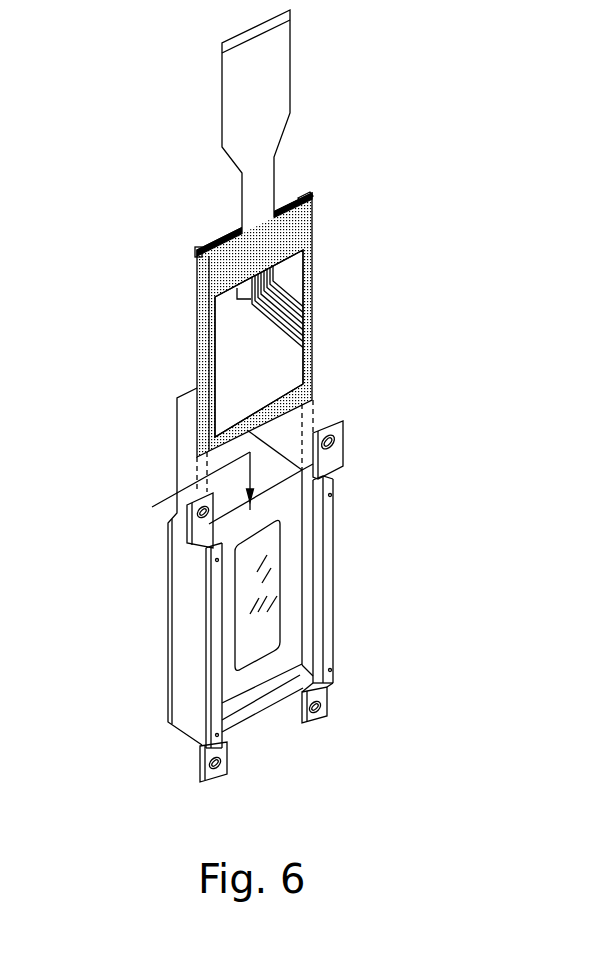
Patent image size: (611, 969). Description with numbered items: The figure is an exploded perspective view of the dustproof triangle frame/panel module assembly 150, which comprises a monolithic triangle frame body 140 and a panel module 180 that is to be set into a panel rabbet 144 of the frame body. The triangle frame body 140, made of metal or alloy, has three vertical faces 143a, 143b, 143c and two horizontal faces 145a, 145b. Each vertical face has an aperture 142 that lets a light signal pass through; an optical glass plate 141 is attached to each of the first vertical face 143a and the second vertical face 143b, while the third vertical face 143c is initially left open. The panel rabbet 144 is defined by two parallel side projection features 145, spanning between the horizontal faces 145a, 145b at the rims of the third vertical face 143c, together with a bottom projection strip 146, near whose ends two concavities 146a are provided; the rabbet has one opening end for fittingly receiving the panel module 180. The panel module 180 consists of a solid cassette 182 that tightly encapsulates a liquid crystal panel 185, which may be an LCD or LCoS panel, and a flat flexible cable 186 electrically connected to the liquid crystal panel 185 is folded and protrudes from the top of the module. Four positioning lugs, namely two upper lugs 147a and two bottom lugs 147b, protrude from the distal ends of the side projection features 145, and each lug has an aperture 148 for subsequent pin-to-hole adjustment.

The dustproof triangle frame/panel module assembly 150 is at (437, 150).
The panel module 180 is at (289, 312).
The cassette 182 is at (307, 192).
The liquid crystal panel 185 is at (233, 364).
The flat flexible cable 186 is at (272, 86).
The monolithic triangle frame body 140 is at (350, 563).
The optical glass plate 141 is at (270, 552).
The aperture 142 is at (233, 723).
The first vertical face 143a is at (287, 443).
The second vertical face 143b is at (168, 465).
The third vertical face 143c is at (288, 597).
The panel rabbet 144 is at (213, 479).
The side projection feature 145 is at (215, 642).
The horizontal face 145a is at (187, 453).
The horizontal face 145b is at (245, 655).
The bottom projection strip 146 is at (237, 725).
The concavity 146a is at (327, 690).
The upper lug 147a is at (193, 518).
The bottom lug 147b is at (248, 741).
The aperture 148 is at (320, 712).